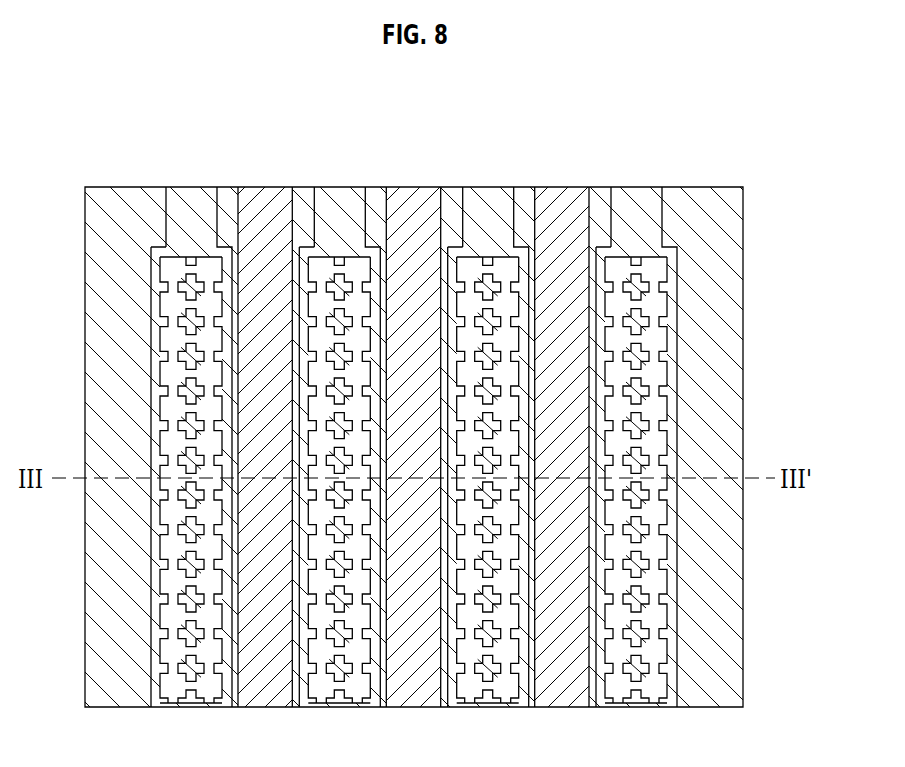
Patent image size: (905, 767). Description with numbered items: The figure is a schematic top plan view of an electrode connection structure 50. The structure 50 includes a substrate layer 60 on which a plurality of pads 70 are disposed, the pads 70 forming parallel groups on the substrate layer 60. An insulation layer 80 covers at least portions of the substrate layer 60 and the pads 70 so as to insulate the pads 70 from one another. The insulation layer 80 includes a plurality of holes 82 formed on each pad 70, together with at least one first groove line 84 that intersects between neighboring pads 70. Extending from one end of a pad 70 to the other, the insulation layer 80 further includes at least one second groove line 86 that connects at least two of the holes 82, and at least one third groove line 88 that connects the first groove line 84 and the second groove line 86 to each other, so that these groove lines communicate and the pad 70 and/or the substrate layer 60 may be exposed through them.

The electrode connection structure 50 is at (118, 88).
The substrate layer 60 is at (745, 598).
The pad 70 is at (677, 686).
The insulation layer 80 is at (95, 268).
The hole 82 is at (658, 339).
The first groove line 84 is at (414, 219).
The second groove line 86 is at (170, 634).
The third groove line 88 is at (222, 262).